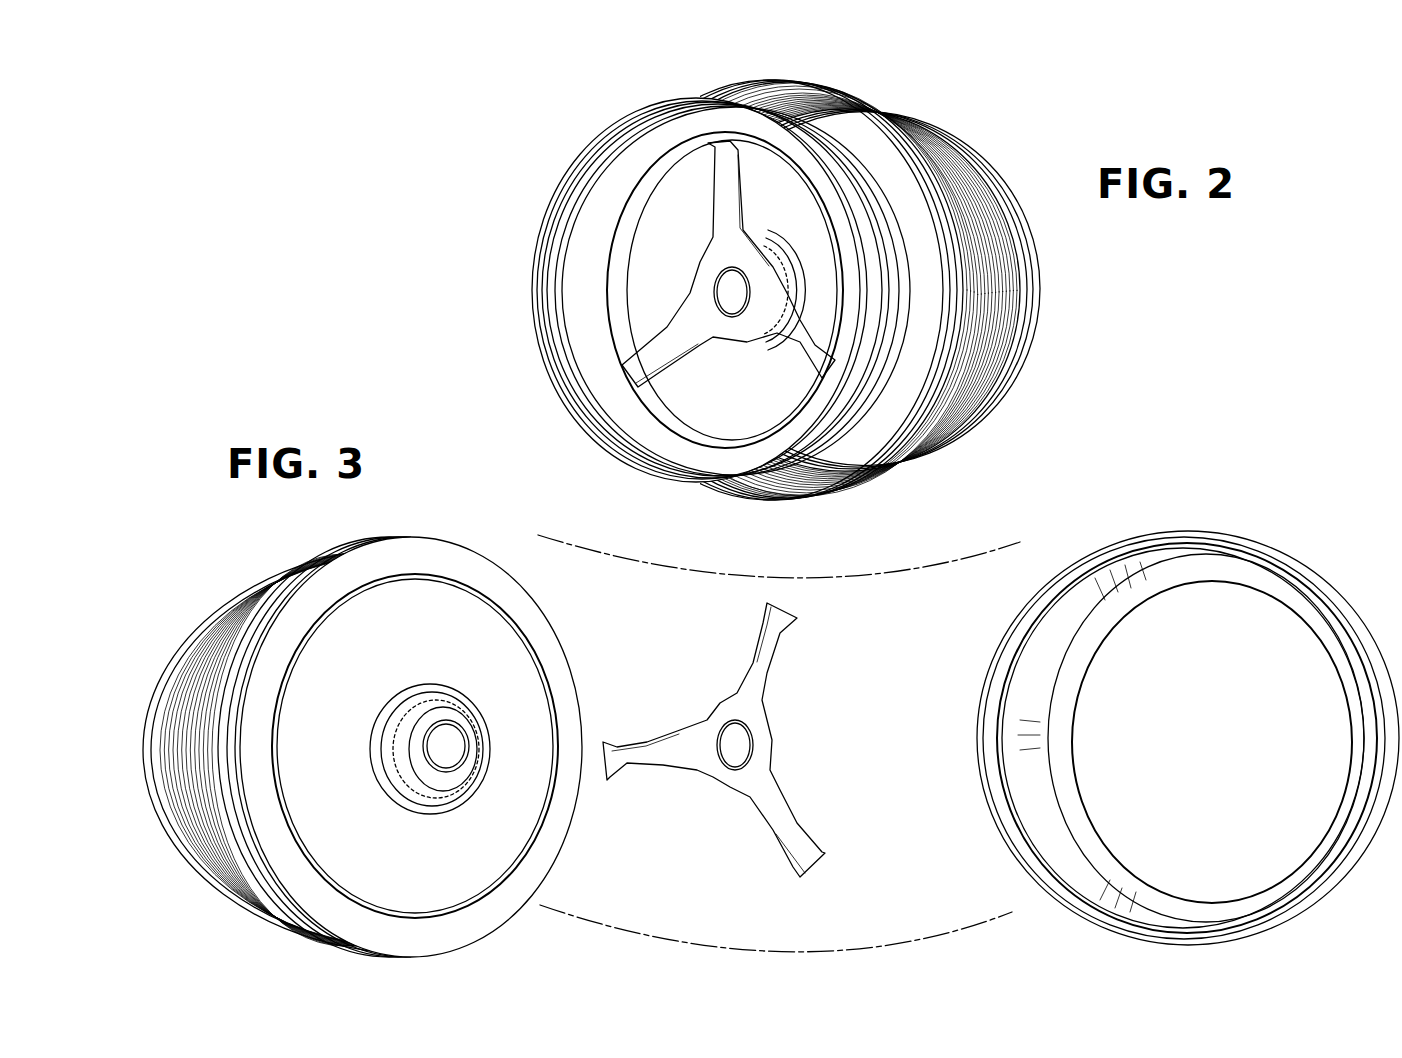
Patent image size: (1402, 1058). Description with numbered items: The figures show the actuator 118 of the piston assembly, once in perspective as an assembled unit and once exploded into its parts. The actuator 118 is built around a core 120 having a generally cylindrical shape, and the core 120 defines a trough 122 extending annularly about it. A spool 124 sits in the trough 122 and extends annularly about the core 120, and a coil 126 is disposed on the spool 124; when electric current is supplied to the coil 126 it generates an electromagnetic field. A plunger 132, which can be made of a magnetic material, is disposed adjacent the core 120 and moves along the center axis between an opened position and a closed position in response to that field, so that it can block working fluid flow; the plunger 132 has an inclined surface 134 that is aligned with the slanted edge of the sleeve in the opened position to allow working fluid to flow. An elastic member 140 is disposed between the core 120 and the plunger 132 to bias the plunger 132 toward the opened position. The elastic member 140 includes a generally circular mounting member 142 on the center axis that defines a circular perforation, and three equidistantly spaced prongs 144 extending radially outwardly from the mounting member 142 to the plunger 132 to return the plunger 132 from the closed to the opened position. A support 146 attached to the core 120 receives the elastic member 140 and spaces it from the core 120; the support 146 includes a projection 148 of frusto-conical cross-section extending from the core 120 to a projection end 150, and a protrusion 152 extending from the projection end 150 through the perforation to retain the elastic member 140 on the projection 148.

In FIG. 2, the actuator 118 is at (797, 289).
In FIG. 3, the actuator 118 is at (411, 705).
In FIG. 2, the core 120 is at (688, 280).
In FIG. 3, the core 120 is at (482, 573).
In FIG. 2, the trough 122 is at (860, 290).
In FIG. 3, the trough 122 is at (411, 731).
In FIG. 2, the spool 124 is at (1030, 277).
In FIG. 3, the spool 124 is at (168, 653).
In FIG. 2, the coil 126 is at (985, 235).
In FIG. 3, the coil 126 is at (207, 856).
In FIG. 2, the plunger 132 is at (647, 113).
In FIG. 3, the plunger 132 is at (1188, 733).
In FIG. 3, the inclined surface 134 is at (1092, 597).
In FIG. 2, the elastic member 140 is at (745, 234).
In FIG. 3, the elastic member 140 is at (723, 740).
In FIG. 2, the mounting member 142 is at (708, 302).
In FIG. 3, the mounting member 142 is at (722, 780).
In FIG. 2, the prongs 144 is at (693, 140).
In FIG. 3, the prongs 144 is at (760, 668).
In FIG. 2, the support 146 is at (826, 200).
In FIG. 3, the support 146 is at (389, 728).
In FIG. 2, the projection 148 is at (793, 267).
In FIG. 3, the projection 148 is at (383, 729).
In FIG. 2, the projection end 150 is at (797, 298).
In FIG. 3, the projection end 150 is at (414, 761).
In FIG. 2, the protrusion 152 is at (735, 320).
In FIG. 3, the protrusion 152 is at (440, 740).